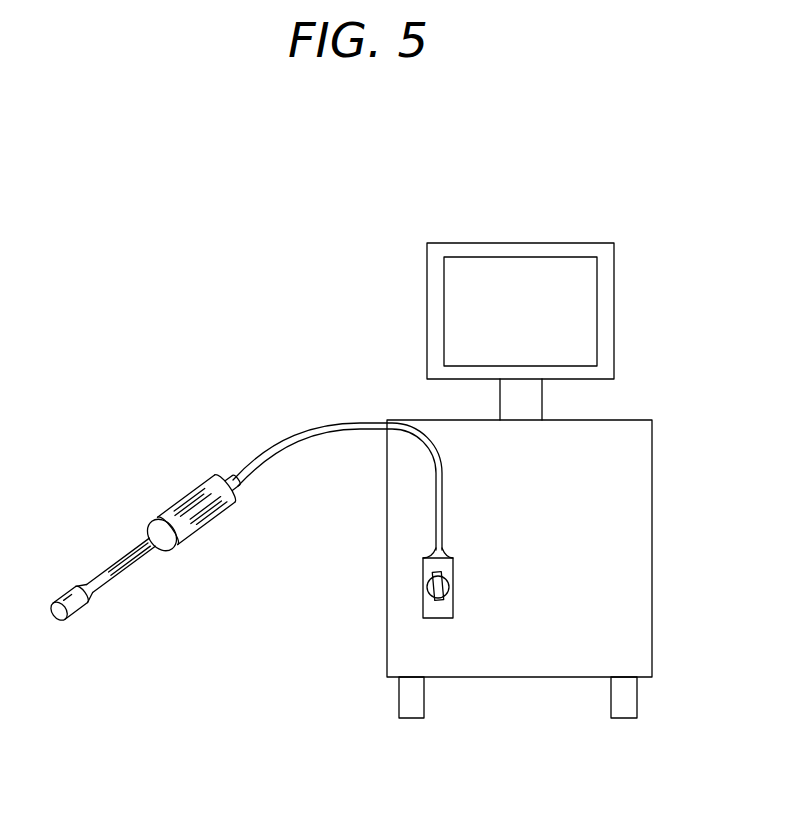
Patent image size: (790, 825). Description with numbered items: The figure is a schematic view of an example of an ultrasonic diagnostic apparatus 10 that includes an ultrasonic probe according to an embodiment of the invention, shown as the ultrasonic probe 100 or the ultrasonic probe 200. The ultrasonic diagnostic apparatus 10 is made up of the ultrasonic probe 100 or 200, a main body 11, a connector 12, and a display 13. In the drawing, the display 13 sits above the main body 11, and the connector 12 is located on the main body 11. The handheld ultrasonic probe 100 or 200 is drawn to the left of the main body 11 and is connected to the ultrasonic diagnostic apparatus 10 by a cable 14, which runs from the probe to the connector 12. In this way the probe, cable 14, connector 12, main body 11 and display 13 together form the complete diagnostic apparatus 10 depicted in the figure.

The ultrasonic diagnostic apparatus 10 is at (106, 159).
The main body 11 is at (642, 523).
The connector 12 is at (457, 571).
The display 13 is at (520, 262).
The cable 14 is at (342, 423).
The ultrasonic probe 100 is at (149, 489).
The ultrasonic probe 200 is at (145, 547).